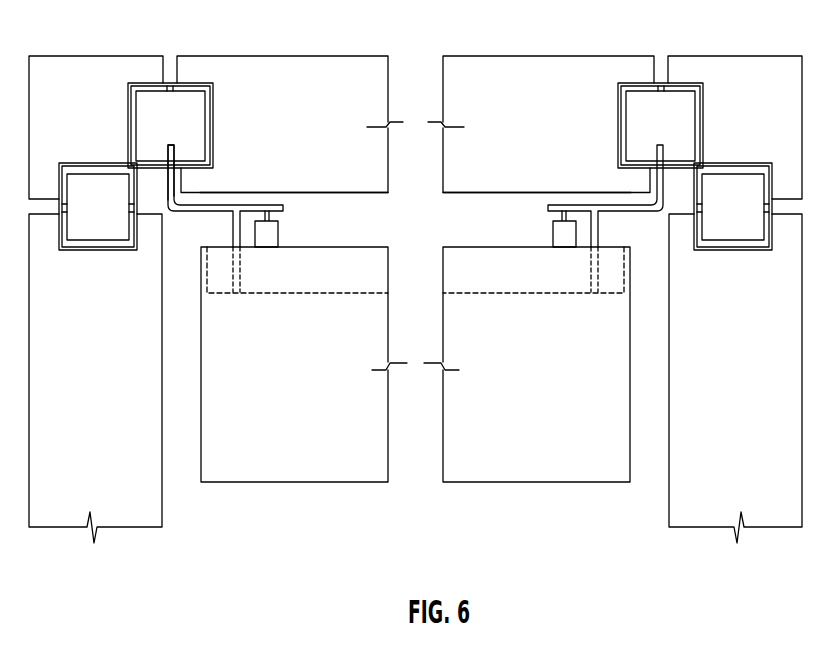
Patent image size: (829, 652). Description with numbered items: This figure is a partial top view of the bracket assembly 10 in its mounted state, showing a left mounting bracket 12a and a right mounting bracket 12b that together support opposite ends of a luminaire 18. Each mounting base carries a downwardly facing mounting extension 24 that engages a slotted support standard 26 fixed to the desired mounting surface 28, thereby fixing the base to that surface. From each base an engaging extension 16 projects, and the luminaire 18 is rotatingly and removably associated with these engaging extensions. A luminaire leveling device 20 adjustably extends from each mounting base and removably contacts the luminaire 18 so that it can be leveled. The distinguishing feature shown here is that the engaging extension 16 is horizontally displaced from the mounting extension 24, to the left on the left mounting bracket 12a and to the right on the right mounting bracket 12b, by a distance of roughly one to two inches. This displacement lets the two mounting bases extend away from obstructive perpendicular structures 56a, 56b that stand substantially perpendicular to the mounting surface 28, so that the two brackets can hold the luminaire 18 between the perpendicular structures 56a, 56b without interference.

The bracket assembly 10 is at (573, 157).
The left mounting bracket 12a is at (212, 210).
The right mounting bracket 12b is at (595, 208).
The engaging extension 16 is at (233, 273).
The luminaire 18 is at (337, 463).
The luminaire leveling device 20 is at (278, 230).
The downwardly facing mounting extension 24 is at (172, 148).
The slotted support standard 26 is at (197, 103).
The desired surface 28 is at (332, 193).
The perpendicular structure 56a is at (162, 383).
The perpendicular structure 56b is at (670, 387).